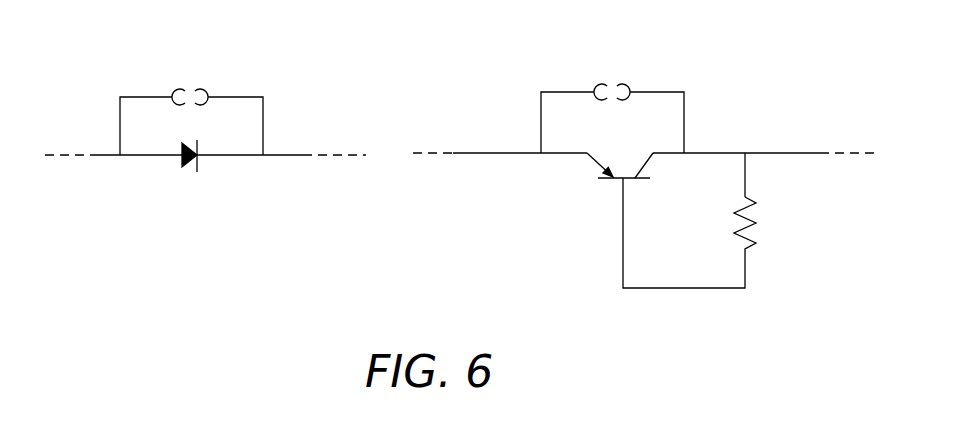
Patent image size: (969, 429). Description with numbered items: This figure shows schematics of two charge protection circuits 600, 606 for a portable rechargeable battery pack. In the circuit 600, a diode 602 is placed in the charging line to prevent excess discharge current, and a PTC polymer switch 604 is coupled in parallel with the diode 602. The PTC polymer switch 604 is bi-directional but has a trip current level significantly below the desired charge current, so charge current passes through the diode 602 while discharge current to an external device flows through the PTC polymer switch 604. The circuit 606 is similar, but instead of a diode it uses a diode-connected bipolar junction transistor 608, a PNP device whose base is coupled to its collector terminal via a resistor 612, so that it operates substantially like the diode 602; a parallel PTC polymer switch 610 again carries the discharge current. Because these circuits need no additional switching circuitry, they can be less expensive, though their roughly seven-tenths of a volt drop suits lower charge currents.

The charge protection circuit 600 is at (100, 31).
The diode 602 is at (190, 171).
The PTC polymer switch 604 is at (200, 87).
The charge protection circuit 606 is at (870, 63).
The bipolar junction transistor 608 is at (603, 181).
The PTC polymer switch 610 is at (622, 83).
The resistor 612 is at (758, 222).